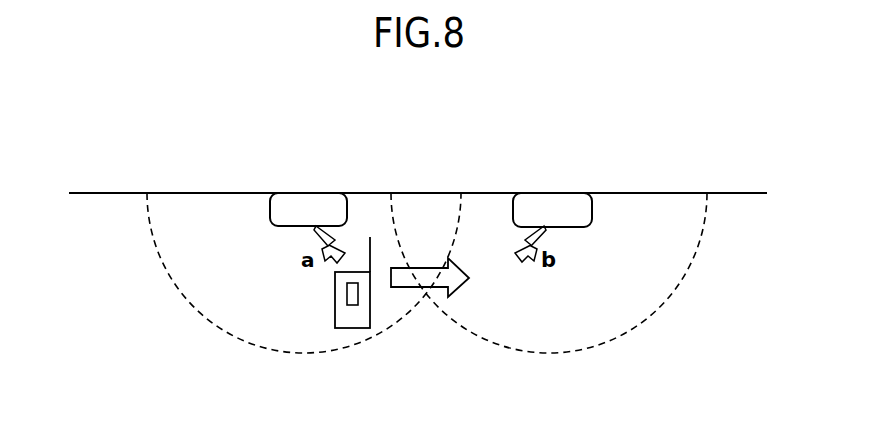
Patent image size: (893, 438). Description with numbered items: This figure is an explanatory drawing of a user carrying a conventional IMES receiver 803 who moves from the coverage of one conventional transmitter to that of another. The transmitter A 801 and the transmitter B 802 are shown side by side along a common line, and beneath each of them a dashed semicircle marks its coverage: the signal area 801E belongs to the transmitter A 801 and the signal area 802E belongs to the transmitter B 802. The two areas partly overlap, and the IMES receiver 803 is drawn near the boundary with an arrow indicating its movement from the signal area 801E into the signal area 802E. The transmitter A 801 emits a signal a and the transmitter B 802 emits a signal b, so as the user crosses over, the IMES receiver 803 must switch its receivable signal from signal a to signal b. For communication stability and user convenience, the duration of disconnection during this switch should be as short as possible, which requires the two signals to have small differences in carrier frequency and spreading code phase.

The transmitter A 801 is at (327, 191).
The transmitter B 802 is at (569, 191).
The signal area of transmitter A 801E is at (203, 318).
The signal area of transmitter B 802E is at (447, 318).
The IMES receiver 803 is at (348, 329).